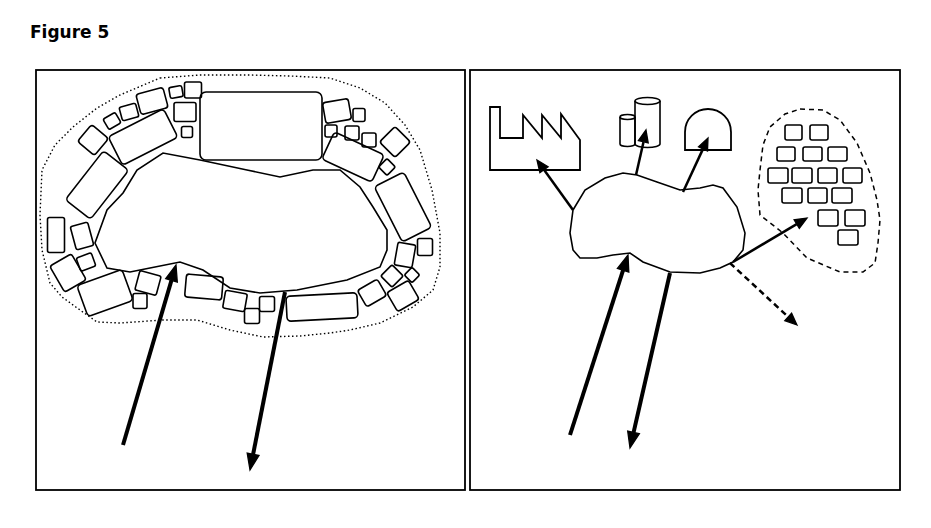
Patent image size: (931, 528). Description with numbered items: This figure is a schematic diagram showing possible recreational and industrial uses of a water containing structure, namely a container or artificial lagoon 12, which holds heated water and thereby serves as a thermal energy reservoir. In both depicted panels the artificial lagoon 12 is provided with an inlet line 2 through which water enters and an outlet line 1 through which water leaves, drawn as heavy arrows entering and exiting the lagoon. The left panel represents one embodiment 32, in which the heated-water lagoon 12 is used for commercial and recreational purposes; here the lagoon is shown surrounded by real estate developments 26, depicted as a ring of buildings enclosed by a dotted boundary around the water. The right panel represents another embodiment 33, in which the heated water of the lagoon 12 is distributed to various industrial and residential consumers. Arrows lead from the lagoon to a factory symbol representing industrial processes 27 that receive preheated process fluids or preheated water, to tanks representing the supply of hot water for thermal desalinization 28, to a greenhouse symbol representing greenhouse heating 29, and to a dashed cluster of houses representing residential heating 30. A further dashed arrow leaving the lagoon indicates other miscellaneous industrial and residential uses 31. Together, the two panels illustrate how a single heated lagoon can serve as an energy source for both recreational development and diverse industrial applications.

The outlet line 1 is at (461, 371).
The inlet line 2 is at (376, 350).
The artificial lagoon 12 is at (420, 223).
The real estate developments 26 is at (390, 110).
The industrial processes 27 is at (535, 148).
The thermal desalinization 28 is at (629, 131).
The greenhouse heating 29 is at (707, 140).
The residential heating 30 is at (825, 114).
The miscellaneous industrial and residential uses 31 is at (776, 309).
The commercial/recreational embodiment 32 is at (250, 280).
The industrial use embodiment 33 is at (685, 280).